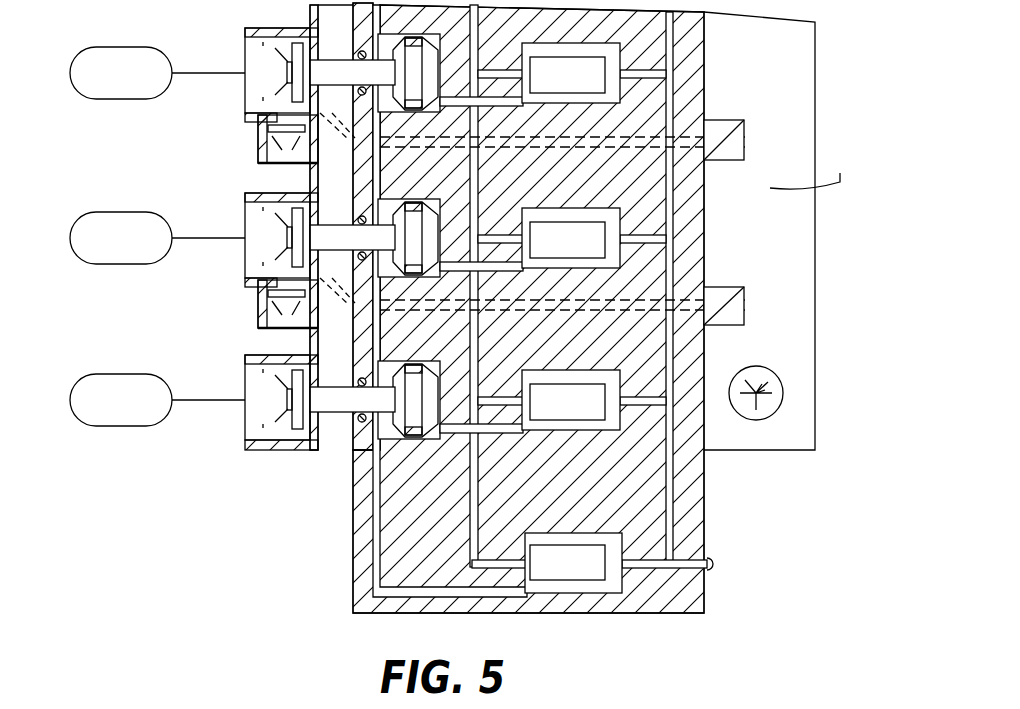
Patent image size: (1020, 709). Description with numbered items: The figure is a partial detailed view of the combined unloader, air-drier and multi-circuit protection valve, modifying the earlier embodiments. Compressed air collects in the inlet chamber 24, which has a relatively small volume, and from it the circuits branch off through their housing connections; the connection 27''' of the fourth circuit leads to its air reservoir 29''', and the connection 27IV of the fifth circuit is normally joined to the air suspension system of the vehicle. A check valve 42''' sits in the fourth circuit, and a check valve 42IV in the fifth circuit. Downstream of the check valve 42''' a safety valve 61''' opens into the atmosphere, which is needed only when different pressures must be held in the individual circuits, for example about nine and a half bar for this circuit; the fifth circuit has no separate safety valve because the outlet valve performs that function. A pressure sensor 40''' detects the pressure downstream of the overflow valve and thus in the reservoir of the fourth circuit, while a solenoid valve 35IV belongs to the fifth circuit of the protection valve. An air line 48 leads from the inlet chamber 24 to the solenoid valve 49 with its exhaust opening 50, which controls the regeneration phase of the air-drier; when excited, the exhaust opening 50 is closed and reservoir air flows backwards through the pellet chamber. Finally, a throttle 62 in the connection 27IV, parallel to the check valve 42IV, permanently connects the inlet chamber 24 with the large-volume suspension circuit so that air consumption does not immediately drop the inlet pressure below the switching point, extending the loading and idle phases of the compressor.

The inlet chamber 24 is at (324, 380).
The air line 48 is at (473, 485).
The solenoid valve 49 is at (582, 530).
The exhaust opening 50 is at (717, 563).
The throttle 62 is at (347, 427).
The check valve 42''' is at (215, 244).
The check valve 42IV is at (268, 446).
The safety valve 61''' is at (220, 308).
The connection 27''' is at (220, 197).
The connection 27IV is at (262, 413).
The air reservoir 29''' is at (94, 225).
The pressure sensor 40''' is at (756, 275).
The solenoid valve 35IV is at (583, 367).